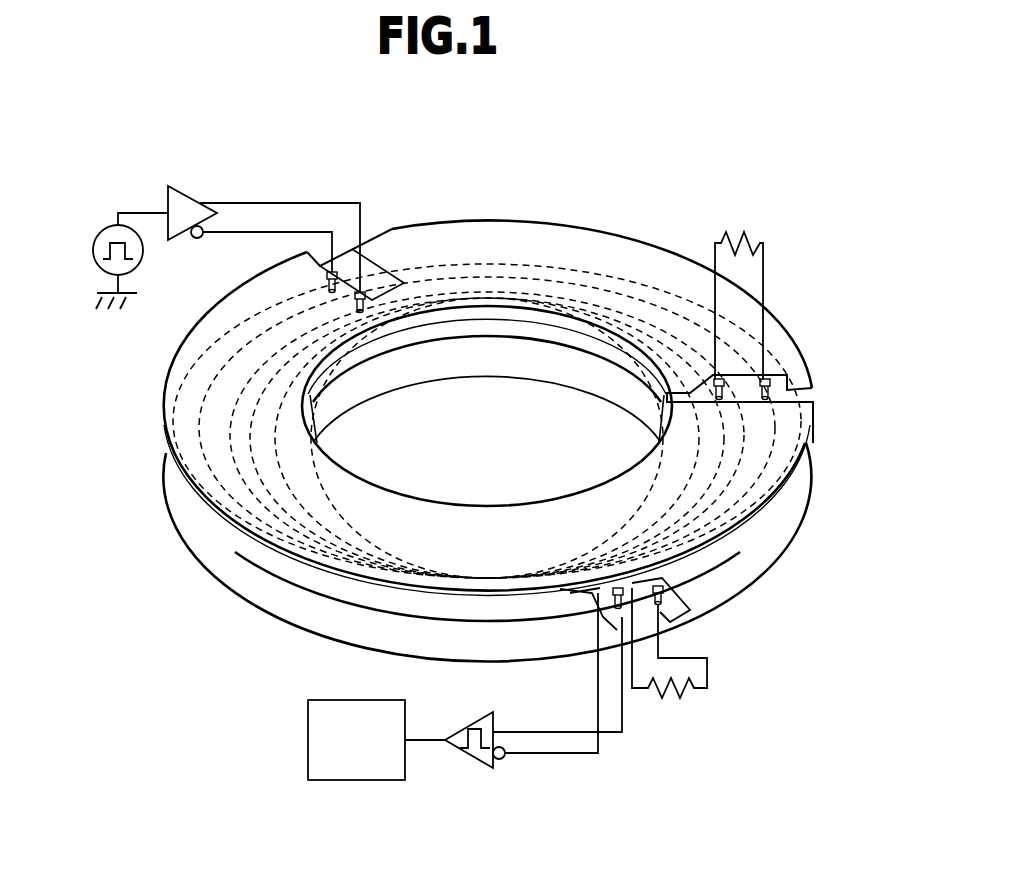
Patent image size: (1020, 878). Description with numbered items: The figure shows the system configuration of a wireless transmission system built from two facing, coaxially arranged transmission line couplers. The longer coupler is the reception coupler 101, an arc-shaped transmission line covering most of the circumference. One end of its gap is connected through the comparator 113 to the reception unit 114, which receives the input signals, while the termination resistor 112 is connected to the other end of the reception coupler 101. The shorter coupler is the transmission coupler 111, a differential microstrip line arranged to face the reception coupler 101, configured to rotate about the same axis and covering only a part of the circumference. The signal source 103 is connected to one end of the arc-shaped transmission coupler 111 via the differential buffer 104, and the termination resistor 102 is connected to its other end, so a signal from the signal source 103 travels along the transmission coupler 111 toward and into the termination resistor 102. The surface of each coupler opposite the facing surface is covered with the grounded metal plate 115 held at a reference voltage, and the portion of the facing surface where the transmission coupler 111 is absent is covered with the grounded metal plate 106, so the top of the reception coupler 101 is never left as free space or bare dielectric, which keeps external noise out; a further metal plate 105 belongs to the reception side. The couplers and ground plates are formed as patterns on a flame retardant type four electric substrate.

The reception coupler 101 is at (323, 588).
The termination resistor 102 is at (738, 232).
The signal source 103 is at (96, 236).
The differential buffer 104 is at (184, 192).
The metal plate 105 is at (181, 500).
The metal plate 106 is at (175, 378).
The transmission coupler 111 is at (527, 270).
The termination resistor 112 is at (686, 697).
The comparator 113 is at (468, 766).
The reception unit 114 is at (356, 782).
The metal plate 115 is at (597, 242).